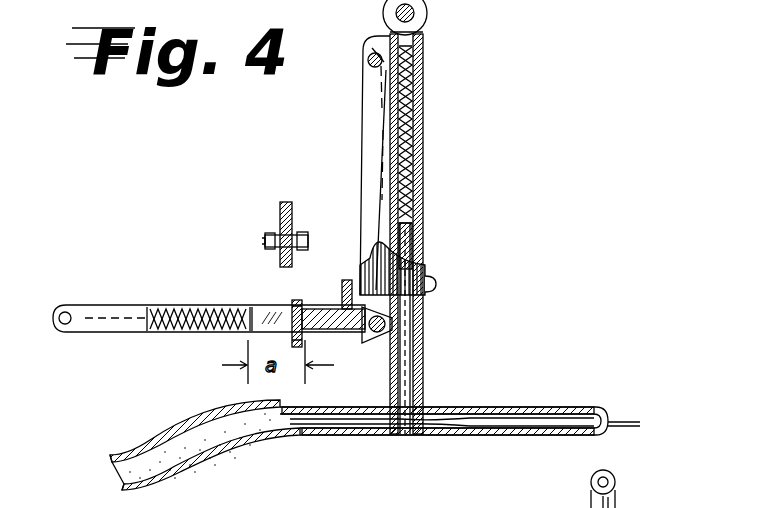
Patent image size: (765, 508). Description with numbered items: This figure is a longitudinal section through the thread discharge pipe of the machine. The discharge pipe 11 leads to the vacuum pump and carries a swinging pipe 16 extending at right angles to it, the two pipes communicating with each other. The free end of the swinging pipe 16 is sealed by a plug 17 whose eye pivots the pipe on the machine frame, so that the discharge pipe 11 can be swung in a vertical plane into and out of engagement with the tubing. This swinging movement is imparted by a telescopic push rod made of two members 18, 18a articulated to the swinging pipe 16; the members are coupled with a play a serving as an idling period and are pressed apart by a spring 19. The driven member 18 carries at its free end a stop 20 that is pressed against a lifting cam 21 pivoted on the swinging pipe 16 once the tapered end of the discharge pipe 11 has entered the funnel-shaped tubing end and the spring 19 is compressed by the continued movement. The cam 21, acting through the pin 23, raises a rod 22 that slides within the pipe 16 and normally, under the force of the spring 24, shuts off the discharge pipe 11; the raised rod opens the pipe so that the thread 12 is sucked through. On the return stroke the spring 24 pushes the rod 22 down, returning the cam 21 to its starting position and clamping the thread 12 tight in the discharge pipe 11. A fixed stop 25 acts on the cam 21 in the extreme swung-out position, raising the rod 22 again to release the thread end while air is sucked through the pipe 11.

The discharge pipe 11 is at (504, 437).
The thread 12 is at (622, 422).
The swinging pipe 16 is at (424, 347).
The plug 17 is at (412, 46).
The driven member of the push rod 18 is at (107, 306).
The member of the push rod 18a is at (358, 335).
The spring 19 is at (190, 312).
The stop 20 is at (343, 287).
The lifting cam 21 is at (437, 285).
The rod 22 is at (409, 388).
The pin 23 is at (409, 270).
The spring 24 is at (414, 158).
The fixed stop 25 is at (309, 243).